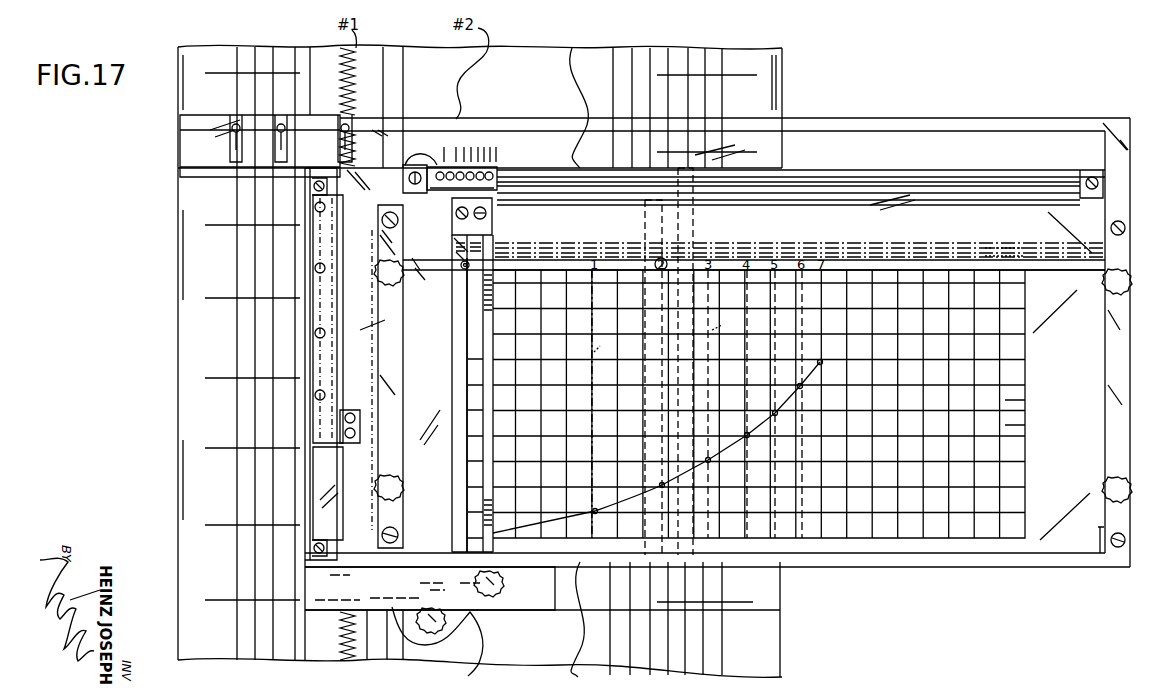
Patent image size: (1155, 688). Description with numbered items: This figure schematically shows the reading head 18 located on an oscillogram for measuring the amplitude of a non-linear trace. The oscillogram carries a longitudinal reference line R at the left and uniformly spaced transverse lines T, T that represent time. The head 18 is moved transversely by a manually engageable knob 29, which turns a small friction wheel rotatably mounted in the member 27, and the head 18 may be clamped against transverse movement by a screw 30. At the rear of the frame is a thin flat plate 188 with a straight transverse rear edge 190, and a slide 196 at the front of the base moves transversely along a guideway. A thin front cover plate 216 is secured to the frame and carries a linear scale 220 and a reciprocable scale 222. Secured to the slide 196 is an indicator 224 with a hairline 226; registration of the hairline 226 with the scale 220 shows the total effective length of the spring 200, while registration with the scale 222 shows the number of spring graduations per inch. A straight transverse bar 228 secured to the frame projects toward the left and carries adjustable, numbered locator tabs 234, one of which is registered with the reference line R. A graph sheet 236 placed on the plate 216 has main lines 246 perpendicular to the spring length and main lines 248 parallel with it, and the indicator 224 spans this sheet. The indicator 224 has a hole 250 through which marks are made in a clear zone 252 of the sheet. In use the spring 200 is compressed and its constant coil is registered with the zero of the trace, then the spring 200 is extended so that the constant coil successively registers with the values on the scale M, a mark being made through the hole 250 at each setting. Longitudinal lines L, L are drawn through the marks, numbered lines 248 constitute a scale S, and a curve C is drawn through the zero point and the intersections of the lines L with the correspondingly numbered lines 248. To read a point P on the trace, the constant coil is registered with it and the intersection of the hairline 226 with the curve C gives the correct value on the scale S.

The head 18 is at (892, 540).
The member 27 is at (348, 586).
The manually engageable knob 29 is at (448, 628).
The screw 30 is at (502, 580).
The thin flat plate 188 is at (936, 182).
The straight rear edge 190 is at (850, 172).
The slide 196 is at (490, 232).
The spring 200 is at (432, 173).
The front cover plate 216 is at (1057, 243).
The linear scale 220 is at (938, 252).
The reciprocable scale 222 is at (862, 252).
The indicator 224 is at (460, 347).
The hairline 226 is at (466, 325).
The straight transverse bar 228 is at (882, 130).
The locator tabs 234 is at (234, 118).
The graph sheet 236 is at (1079, 359).
The main lines 246 is at (1000, 398).
The main lines 248 is at (1020, 428).
The hole 250 is at (462, 270).
The clear zone 252 is at (576, 262).
The transverse lines T is at (480, 361).
The scale M is at (455, 130).
The point to be read P is at (498, 166).
The reference line R is at (233, 209).
The scale S is at (452, 420).
The longitudinal lines L is at (663, 335).
The curve C is at (564, 512).